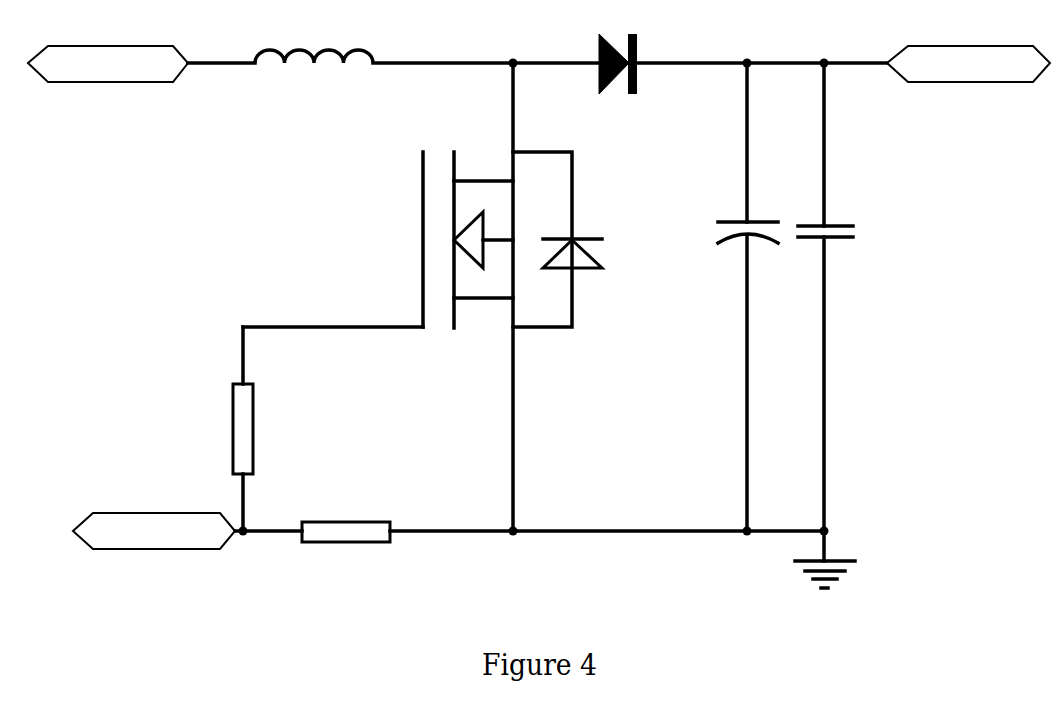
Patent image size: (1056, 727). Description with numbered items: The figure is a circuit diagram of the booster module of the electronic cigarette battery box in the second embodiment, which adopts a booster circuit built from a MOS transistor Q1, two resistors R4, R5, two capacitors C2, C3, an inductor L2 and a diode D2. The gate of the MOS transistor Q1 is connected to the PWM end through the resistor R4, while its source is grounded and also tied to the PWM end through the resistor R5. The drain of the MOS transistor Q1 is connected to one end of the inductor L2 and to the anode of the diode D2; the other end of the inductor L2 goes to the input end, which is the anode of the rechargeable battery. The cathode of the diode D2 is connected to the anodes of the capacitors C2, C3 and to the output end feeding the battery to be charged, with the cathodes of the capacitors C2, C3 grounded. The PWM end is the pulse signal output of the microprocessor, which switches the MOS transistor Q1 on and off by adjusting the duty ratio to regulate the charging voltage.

The inductor L2 is at (314, 42).
The diode D2 is at (598, 63).
The MOS transistor Q1 is at (422, 240).
The resistor R4 is at (261, 429).
The resistor R5 is at (346, 517).
The capacitor C2 is at (739, 297).
The capacitor C3 is at (836, 297).
The PWM end PWM is at (154, 531).